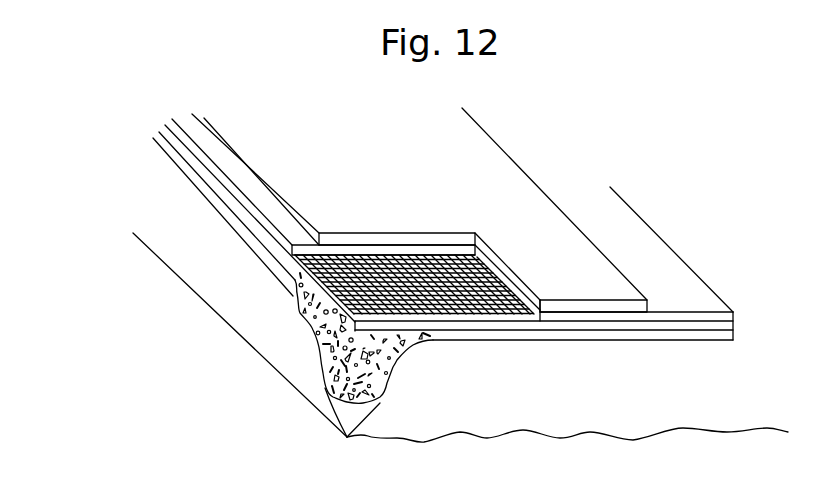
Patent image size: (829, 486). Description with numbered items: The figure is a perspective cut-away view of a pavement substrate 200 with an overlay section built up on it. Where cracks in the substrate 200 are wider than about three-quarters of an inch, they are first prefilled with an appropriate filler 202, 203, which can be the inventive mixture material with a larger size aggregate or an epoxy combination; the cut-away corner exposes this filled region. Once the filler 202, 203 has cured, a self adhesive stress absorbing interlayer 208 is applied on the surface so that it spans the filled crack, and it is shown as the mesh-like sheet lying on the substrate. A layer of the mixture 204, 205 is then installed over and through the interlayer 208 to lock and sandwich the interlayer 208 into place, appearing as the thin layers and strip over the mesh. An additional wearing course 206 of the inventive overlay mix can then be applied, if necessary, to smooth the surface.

The substrate 200 is at (565, 396).
The filler 202 is at (352, 417).
The filler 203 is at (733, 335).
The layer of the mixture 204 is at (728, 327).
The layer of the mixture 205 is at (599, 214).
The wearing course 206 is at (353, 186).
The self adhesive stress absorbing interlayer 208 is at (438, 263).